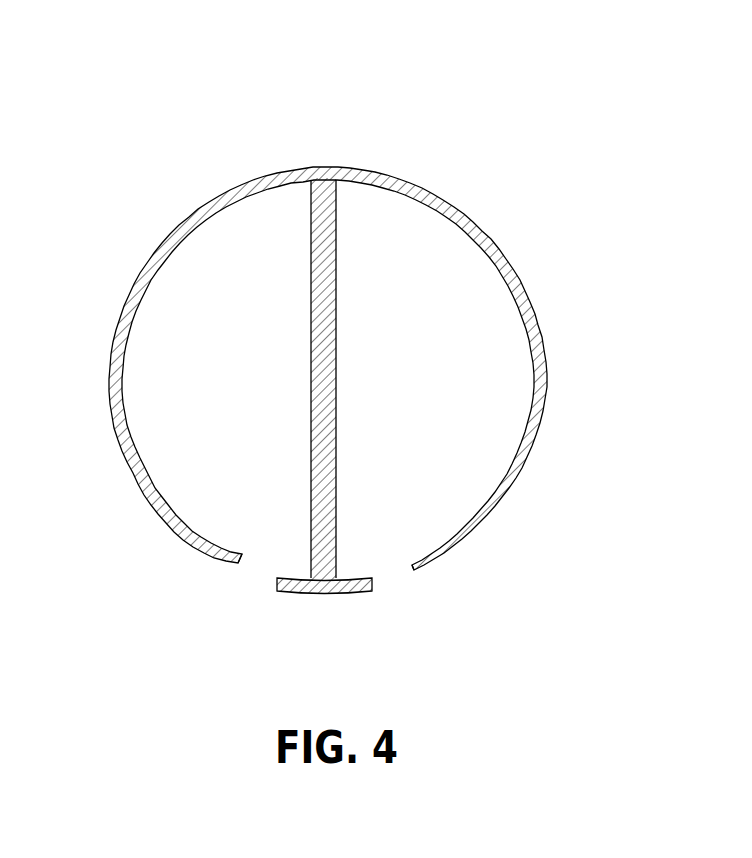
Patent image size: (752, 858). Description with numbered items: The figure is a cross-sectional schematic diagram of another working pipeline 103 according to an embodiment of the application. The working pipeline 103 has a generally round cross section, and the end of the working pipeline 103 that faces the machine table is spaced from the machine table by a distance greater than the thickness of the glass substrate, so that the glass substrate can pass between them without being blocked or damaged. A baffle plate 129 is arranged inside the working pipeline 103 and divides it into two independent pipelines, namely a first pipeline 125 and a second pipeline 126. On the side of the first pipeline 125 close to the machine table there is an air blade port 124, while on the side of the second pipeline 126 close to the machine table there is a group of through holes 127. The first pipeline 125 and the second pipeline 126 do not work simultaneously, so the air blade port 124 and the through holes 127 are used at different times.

The working pipeline 103 is at (447, 200).
The air blade port 124 is at (395, 578).
The first pipeline 125 is at (488, 327).
The second pipeline 126 is at (195, 447).
The through holes 127 is at (253, 580).
The baffle plate 129 is at (320, 343).